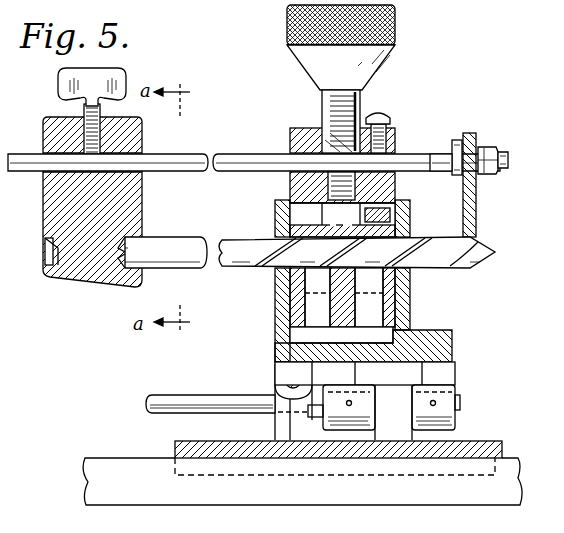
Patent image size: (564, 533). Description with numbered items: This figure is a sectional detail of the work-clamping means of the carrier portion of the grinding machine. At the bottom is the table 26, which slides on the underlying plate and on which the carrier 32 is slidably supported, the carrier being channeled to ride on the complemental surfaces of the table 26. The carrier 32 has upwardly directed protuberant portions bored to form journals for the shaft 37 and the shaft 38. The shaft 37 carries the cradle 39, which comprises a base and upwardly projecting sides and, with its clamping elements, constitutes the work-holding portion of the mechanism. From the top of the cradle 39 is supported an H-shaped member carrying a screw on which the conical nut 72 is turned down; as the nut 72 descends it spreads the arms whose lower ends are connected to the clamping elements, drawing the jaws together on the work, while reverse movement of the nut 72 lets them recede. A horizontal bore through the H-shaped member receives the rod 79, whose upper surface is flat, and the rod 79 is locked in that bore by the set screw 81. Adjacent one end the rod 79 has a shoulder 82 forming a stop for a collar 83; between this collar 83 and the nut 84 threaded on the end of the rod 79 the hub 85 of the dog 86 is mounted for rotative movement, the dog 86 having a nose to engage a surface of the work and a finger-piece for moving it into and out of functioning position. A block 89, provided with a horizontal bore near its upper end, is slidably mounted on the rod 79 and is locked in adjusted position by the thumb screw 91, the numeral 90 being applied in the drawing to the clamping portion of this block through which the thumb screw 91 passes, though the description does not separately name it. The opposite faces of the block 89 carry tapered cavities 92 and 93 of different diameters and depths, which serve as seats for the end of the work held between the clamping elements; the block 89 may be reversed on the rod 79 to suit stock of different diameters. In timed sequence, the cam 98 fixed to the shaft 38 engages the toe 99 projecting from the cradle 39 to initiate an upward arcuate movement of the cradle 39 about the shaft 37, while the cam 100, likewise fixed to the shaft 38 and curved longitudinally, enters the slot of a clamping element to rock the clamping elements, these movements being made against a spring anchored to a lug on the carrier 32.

The table 26 is at (513, 470).
The carrier 32 is at (467, 440).
The shaft 37 is at (290, 376).
The shaft 38 is at (165, 400).
The cradle 39 is at (411, 302).
The conical nut 72 is at (397, 28).
The rod 79 is at (237, 158).
The set screw 81 is at (384, 120).
The shoulder 82 is at (430, 153).
The collar 83 is at (459, 142).
The nut 84 is at (500, 147).
The hub 85 is at (480, 146).
The dog 86 is at (476, 203).
The block 89 is at (142, 193).
The clamp block 90 is at (140, 145).
The thumb screw 91 is at (117, 82).
The tapered cavity 92 is at (140, 231).
The tapered cavity 93 is at (50, 262).
The cam 98 is at (456, 373).
The toe 99 is at (454, 346).
The cam 100 is at (358, 371).